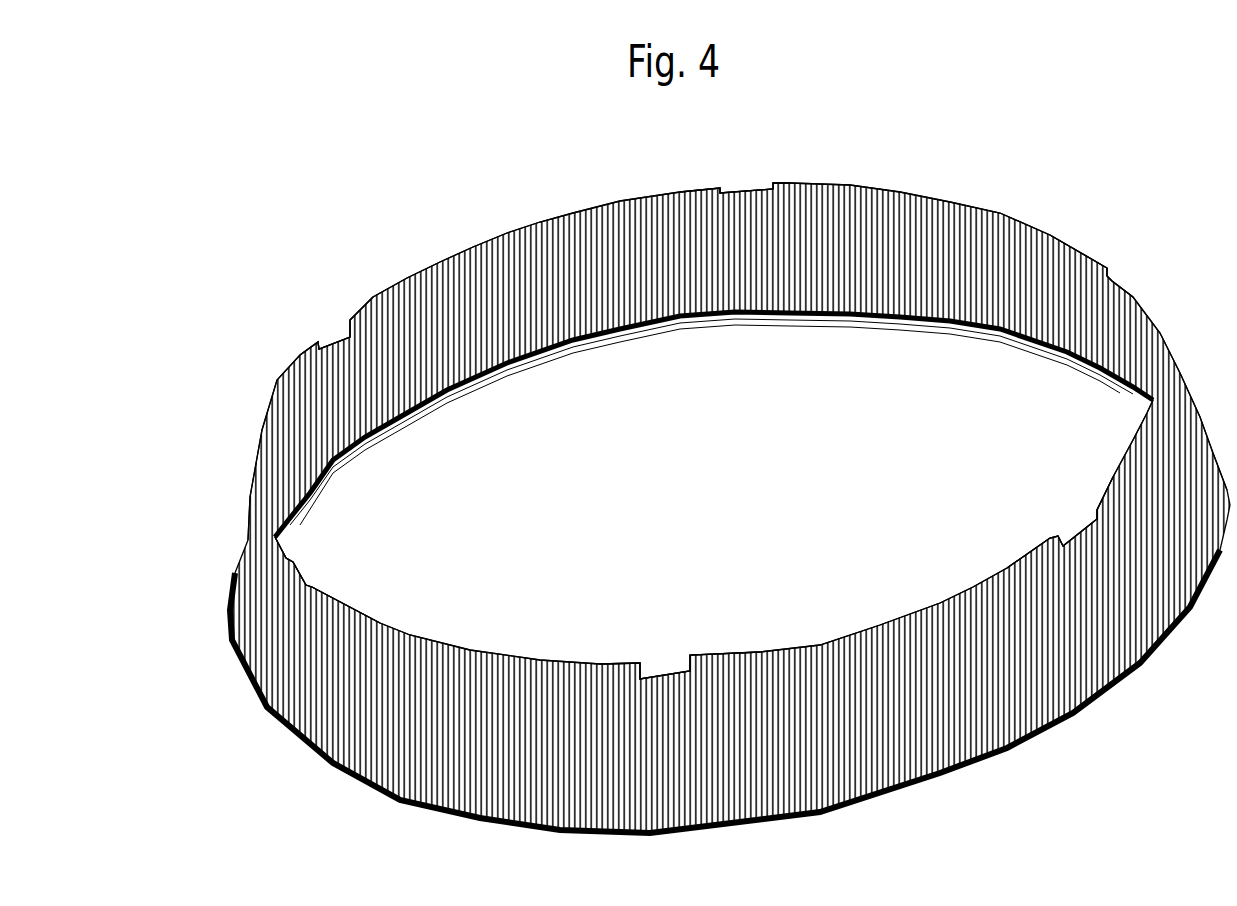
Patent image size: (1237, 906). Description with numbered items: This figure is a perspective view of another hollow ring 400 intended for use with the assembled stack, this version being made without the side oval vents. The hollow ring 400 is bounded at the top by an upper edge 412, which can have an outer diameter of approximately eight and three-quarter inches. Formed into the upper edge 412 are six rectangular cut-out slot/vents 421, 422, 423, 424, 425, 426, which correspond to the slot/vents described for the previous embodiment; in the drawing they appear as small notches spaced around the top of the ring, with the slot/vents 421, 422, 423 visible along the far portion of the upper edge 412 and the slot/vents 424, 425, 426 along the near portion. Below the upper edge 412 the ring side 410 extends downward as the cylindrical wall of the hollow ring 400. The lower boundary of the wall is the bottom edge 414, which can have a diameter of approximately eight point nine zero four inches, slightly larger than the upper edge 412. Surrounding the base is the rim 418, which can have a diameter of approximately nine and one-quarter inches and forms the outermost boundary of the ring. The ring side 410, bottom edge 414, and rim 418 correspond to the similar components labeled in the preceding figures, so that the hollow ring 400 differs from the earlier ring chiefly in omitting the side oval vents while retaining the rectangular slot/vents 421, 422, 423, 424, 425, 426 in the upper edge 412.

The hollow ring 400 is at (453, 173).
The ring side 410 is at (430, 703).
The upper edge 412 is at (540, 222).
The bottom edge 414 is at (468, 392).
The rim 418 is at (283, 725).
The rectangular cut-out slot/vent 421 is at (335, 342).
The rectangular cut-out slot/vent 422 is at (742, 197).
The rectangular cut-out slot/vent 423 is at (1115, 283).
The rectangular cut-out slot/vent 424 is at (1073, 533).
The rectangular cut-out slot/vent 425 is at (663, 678).
The rectangular cut-out slot/vent 426 is at (300, 580).